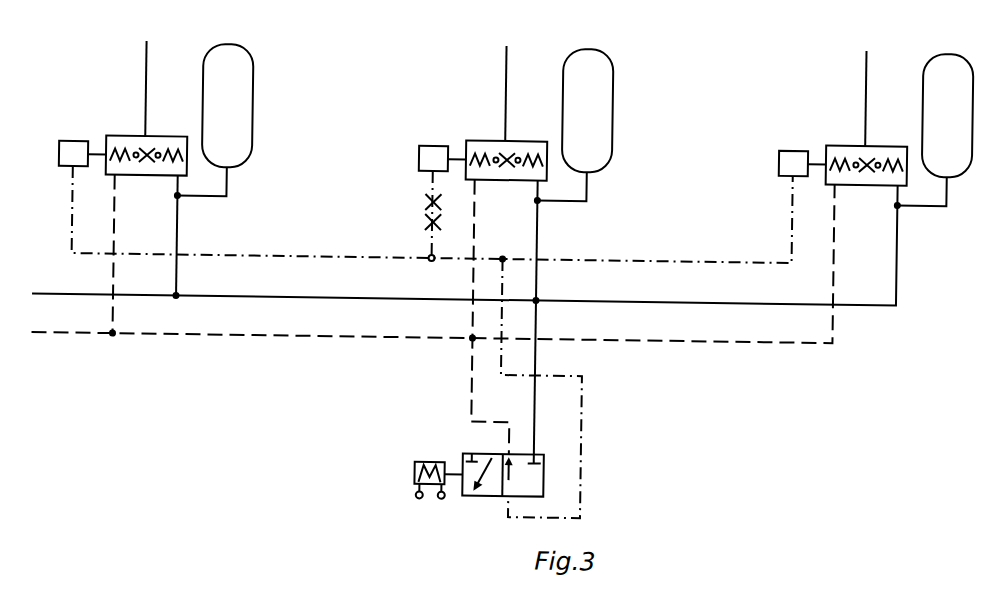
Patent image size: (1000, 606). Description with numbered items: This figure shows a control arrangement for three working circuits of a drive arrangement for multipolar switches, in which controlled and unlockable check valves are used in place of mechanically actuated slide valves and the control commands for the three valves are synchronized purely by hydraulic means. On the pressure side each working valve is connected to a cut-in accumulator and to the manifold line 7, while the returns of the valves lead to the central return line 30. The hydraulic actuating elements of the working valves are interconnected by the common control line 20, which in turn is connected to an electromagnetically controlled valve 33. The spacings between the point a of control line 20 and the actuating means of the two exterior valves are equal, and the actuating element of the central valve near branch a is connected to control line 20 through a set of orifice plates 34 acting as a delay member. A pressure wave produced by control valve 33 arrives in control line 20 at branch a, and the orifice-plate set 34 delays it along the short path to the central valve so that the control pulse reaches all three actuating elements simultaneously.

The manifold line 7 is at (332, 298).
The control line 20 is at (336, 257).
The central return line 30 is at (338, 339).
The electromagnetically controlled valve 33 is at (500, 496).
The set of orifice plates 34 is at (426, 225).
The branch point of control line a is at (510, 250).